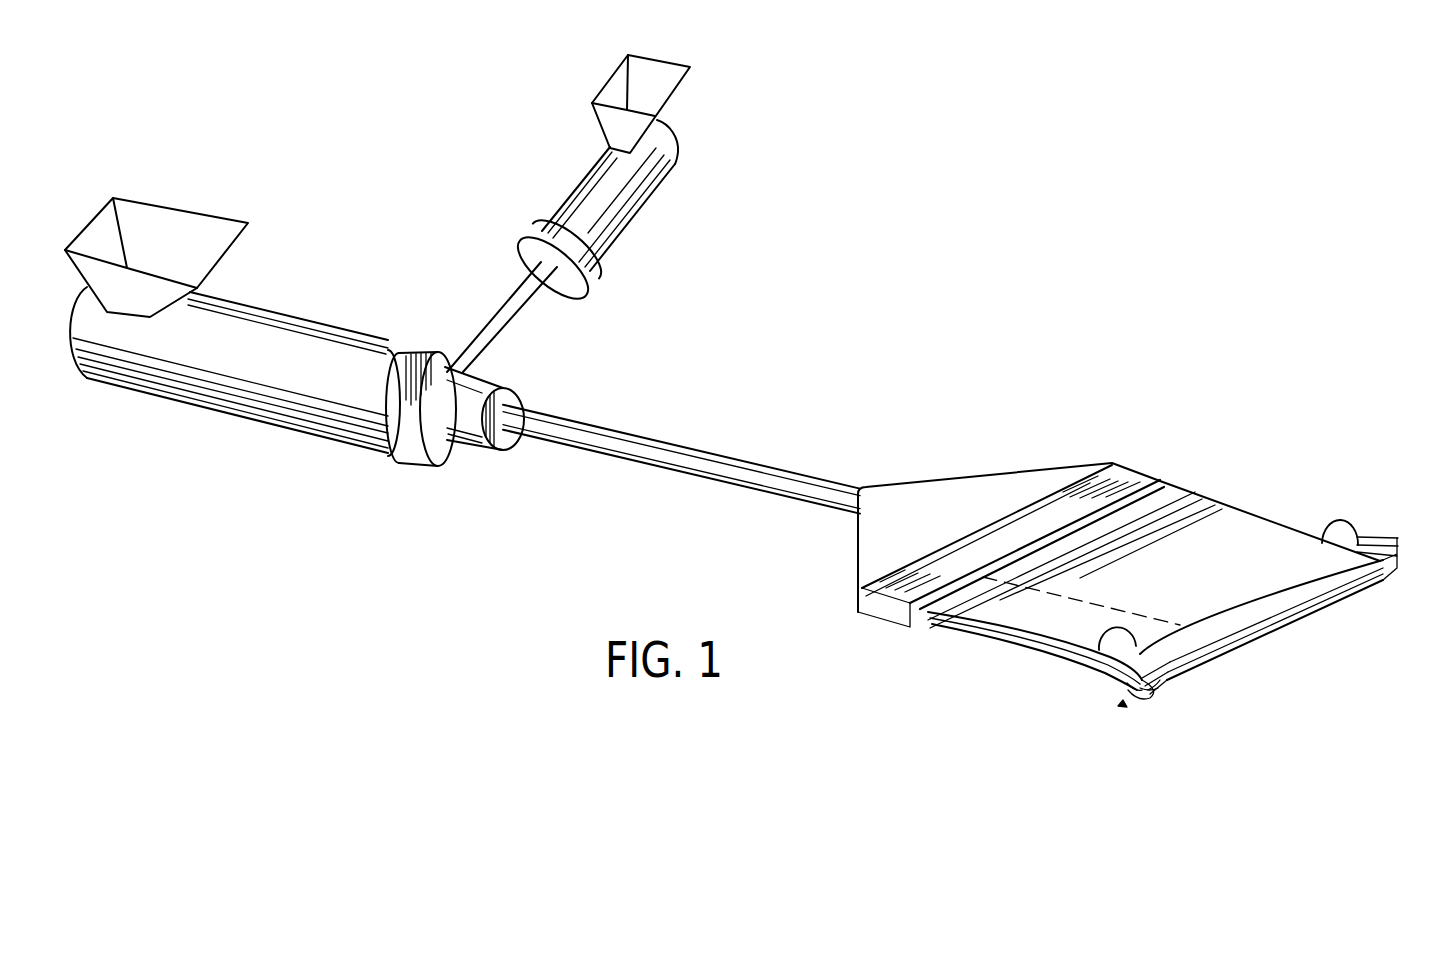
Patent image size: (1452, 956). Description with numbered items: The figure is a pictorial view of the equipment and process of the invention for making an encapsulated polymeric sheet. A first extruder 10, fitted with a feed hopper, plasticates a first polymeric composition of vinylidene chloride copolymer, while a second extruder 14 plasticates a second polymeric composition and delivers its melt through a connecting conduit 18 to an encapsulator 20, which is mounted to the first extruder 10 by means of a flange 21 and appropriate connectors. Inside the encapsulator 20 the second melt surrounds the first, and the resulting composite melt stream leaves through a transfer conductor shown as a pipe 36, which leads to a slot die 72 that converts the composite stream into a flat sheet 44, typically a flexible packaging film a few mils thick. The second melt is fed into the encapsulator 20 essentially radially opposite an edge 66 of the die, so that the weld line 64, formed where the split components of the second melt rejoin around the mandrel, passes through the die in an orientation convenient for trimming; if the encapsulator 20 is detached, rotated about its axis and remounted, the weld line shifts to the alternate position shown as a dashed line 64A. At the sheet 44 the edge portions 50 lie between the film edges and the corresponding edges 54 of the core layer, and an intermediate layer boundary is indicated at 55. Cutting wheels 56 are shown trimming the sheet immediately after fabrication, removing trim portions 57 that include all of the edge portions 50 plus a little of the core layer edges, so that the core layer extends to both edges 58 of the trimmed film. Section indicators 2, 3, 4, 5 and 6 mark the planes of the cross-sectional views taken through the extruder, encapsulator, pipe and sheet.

The first extruder 10 is at (276, 312).
The second extruder 14 is at (578, 178).
The connecting conduit 18 is at (507, 305).
The encapsulator 20 is at (450, 383).
The flange 21 is at (432, 449).
The pipe 36 is at (688, 450).
The sheet die 72 is at (907, 532).
The flat sheet 44 is at (1190, 584).
The cutting wheels 56 is at (1117, 628).
The trim portions 57 is at (1380, 537).
The edges of the trimmed film 58 is at (1382, 565).
The edge of die 66 is at (929, 616).
The weld line 64 is at (1083, 660).
The weld line (alternate position) 64A is at (1248, 641).
The edge portions 50 is at (1127, 683).
The edges of core layer 54 is at (1150, 690).
The corner layer 55 is at (1143, 695).
The section line 2- 2 is at (346, 380).
The section line 3- 3 is at (497, 373).
The section line 4- 4 is at (553, 398).
The section line 5- 5 is at (763, 535).
The section line 6- 6 is at (1287, 472).